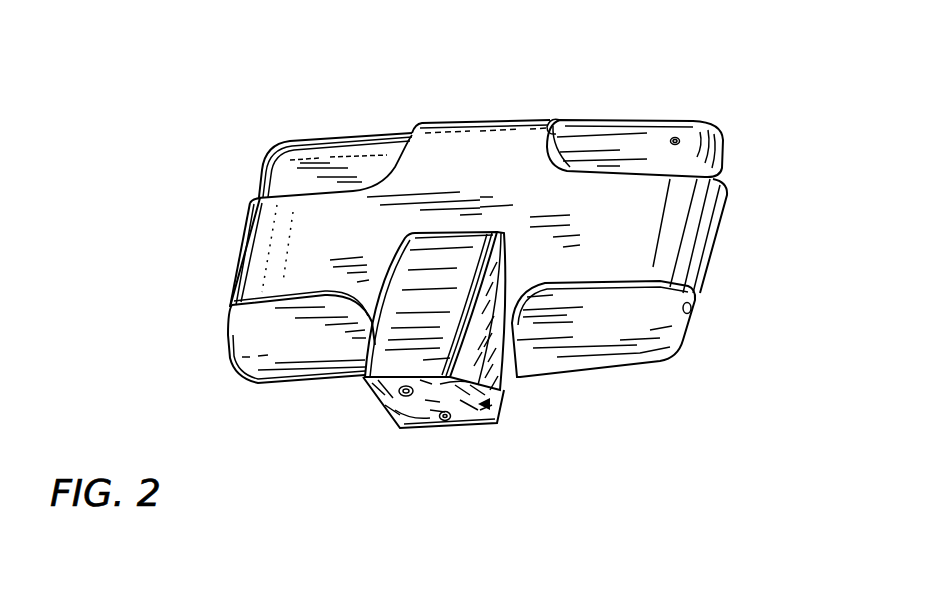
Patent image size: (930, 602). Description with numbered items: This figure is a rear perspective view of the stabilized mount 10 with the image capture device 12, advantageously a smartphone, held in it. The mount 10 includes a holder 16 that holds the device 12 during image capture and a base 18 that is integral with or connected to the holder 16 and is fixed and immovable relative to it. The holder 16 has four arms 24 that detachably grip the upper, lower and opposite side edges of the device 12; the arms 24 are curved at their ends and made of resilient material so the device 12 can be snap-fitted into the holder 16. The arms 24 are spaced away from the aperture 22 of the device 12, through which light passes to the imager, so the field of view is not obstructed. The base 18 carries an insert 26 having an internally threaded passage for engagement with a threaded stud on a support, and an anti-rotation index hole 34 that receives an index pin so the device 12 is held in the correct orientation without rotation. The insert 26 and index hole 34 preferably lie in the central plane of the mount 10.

The stabilized mount 10 is at (489, 286).
The image capture device 12 is at (344, 136).
The holder 16 is at (467, 168).
The base 18 is at (472, 334).
The aperture 22 is at (673, 124).
The arms 24 is at (520, 120).
The insert 26 is at (370, 388).
The anti-rotation index hole 34 is at (443, 422).